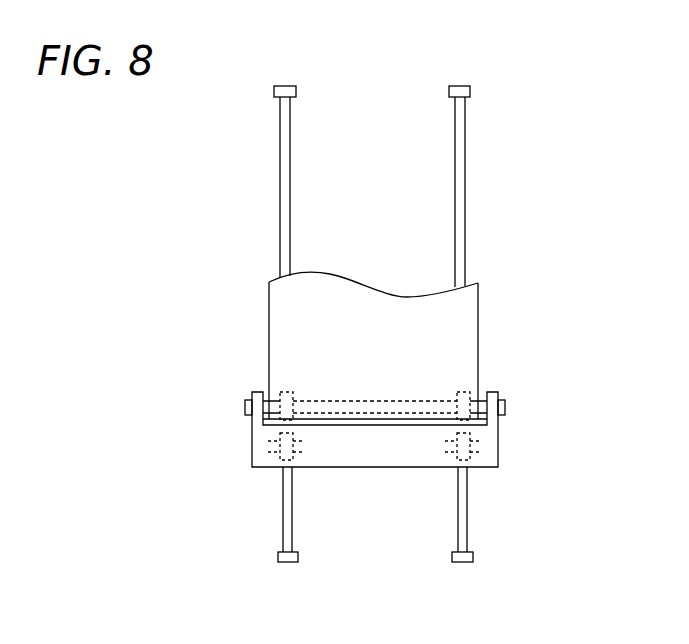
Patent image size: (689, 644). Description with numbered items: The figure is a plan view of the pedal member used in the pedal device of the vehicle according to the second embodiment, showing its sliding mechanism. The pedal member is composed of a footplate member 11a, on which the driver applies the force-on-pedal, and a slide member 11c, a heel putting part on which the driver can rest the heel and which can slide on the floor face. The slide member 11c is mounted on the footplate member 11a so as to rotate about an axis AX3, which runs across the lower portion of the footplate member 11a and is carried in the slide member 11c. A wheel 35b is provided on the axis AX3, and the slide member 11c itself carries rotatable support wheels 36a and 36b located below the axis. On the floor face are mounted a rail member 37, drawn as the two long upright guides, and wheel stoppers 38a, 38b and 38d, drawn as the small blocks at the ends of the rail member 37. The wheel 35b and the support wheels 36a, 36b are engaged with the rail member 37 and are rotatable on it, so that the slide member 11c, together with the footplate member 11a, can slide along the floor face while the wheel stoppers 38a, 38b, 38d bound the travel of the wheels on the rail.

The footplate member 11a is at (479, 295).
The slide member 11c is at (498, 432).
The axis AX3 is at (505, 407).
The wheel 35b is at (463, 392).
The support wheel 36a is at (278, 462).
The support wheel 36b is at (476, 462).
The rail member 37 is at (457, 173).
The wheel stopper 38a is at (287, 85).
The wheel stopper 38b is at (461, 85).
The wheel stopper 38d is at (287, 563).